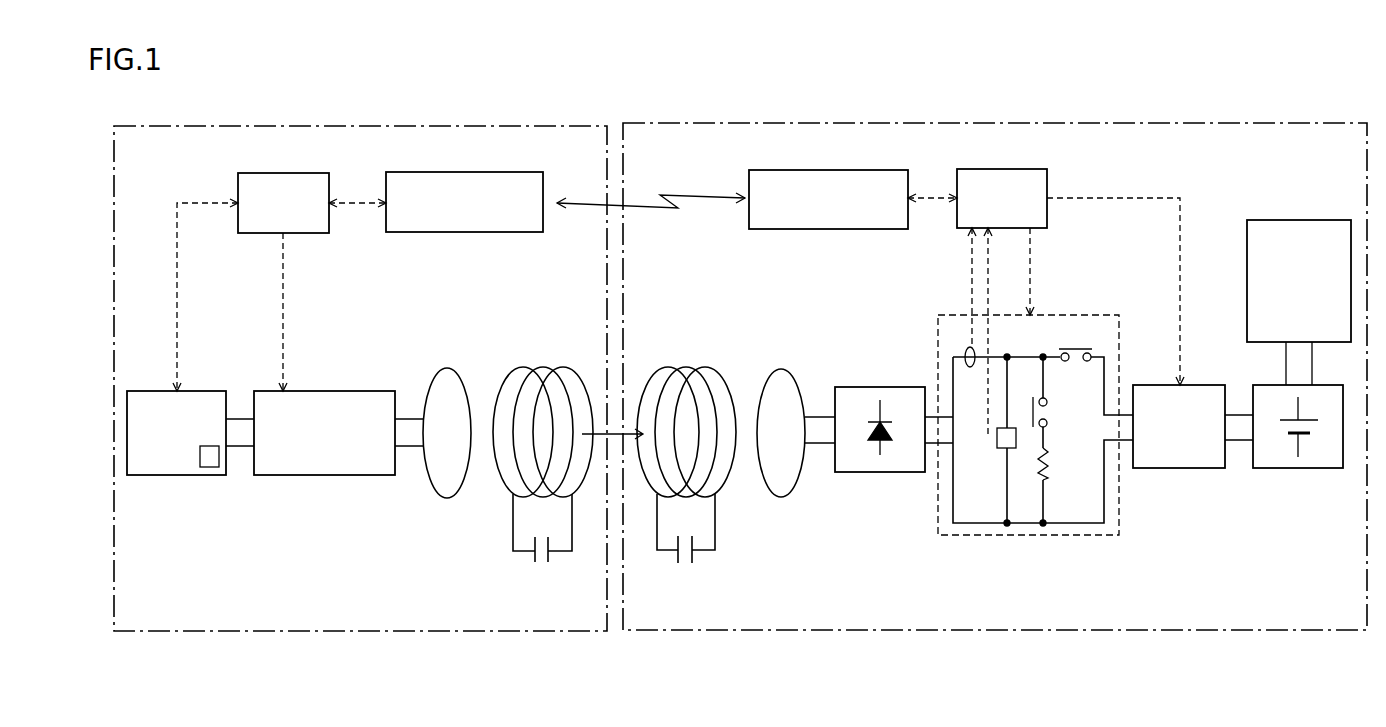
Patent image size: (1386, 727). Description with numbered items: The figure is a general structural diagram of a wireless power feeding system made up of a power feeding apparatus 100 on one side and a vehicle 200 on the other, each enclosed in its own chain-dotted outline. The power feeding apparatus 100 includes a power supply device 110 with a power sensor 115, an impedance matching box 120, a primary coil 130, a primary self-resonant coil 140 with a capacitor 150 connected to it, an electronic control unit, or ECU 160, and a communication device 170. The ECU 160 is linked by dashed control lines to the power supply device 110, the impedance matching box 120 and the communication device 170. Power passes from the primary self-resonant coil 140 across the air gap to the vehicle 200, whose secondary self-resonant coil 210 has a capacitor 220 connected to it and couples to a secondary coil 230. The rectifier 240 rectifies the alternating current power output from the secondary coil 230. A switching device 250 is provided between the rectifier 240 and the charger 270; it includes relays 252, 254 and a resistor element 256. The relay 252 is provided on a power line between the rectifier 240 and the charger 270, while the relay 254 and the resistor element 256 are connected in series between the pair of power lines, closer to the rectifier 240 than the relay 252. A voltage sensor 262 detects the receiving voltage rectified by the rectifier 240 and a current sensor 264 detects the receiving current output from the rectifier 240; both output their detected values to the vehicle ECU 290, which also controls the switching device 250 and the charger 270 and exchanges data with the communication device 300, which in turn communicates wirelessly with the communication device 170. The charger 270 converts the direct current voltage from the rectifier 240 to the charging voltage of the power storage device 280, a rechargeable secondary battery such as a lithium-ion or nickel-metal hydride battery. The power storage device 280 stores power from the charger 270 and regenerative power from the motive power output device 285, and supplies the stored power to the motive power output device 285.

The power feeding apparatus 100 is at (543, 126).
The power supply device 110 is at (190, 391).
The power sensor 115 is at (197, 462).
The impedance matching box 120 is at (349, 475).
The primary coil 130 is at (447, 498).
The primary self-resonant coil 140 is at (545, 368).
The capacitor 150 is at (533, 558).
The electronic control unit (ECU) 160 is at (285, 172).
The communication device 170 is at (497, 172).
The vehicle 200 is at (1288, 122).
The secondary self-resonant coil 210 is at (688, 370).
The capacitor 220 is at (693, 558).
The secondary coil 230 is at (782, 497).
The rectifier 240 is at (880, 472).
The switching device 250 is at (1017, 538).
The relay 252 is at (1075, 347).
The relay 254 is at (1047, 408).
The resistor element 256 is at (1047, 468).
The voltage sensor 262 is at (993, 447).
The current sensor 264 is at (970, 347).
The charger 270 is at (1180, 468).
The power storage device 280 is at (1297, 468).
The motive power output device 285 is at (1298, 220).
The ECU 290 is at (1003, 169).
The communication device 300 is at (863, 170).